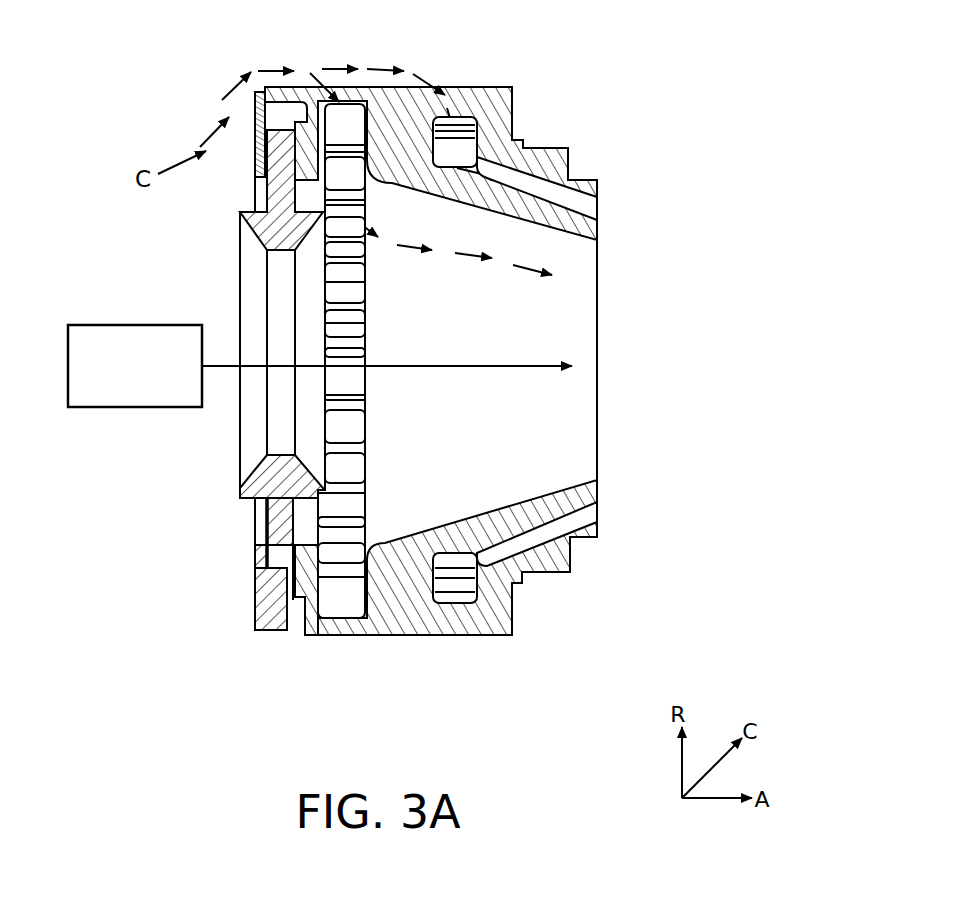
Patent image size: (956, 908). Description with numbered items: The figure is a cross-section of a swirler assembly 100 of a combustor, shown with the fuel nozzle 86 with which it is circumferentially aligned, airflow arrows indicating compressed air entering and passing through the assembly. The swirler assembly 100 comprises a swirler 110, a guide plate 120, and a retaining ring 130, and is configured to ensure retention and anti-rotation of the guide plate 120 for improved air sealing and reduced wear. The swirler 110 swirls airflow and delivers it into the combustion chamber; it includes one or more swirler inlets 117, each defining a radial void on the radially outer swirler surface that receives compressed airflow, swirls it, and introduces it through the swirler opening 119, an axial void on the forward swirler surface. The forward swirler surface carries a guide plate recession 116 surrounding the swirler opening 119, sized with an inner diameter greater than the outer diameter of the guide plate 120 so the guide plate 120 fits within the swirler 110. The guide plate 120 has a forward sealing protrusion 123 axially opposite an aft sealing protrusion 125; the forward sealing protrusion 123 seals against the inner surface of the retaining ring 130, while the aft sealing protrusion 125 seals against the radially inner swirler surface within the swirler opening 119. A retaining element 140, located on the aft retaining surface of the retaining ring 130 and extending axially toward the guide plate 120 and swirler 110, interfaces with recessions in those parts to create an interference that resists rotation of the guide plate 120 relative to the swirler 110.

The fuel nozzle 86 is at (105, 408).
The swirler assembly 100 is at (160, 77).
The swirler 110 is at (506, 88).
The guide plate recession 116 is at (310, 600).
The swirler inlet 117 is at (355, 605).
The swirler opening 119 is at (597, 437).
The guide plate 120 is at (268, 530).
The forward sealing protrusion 123 is at (240, 488).
The aft sealing protrusion 125 is at (240, 224).
The retaining ring 130 is at (255, 170).
The retaining element 140 is at (273, 625).